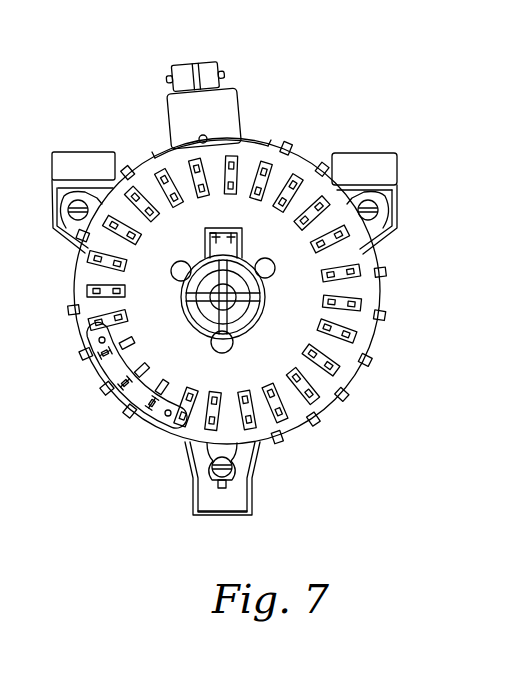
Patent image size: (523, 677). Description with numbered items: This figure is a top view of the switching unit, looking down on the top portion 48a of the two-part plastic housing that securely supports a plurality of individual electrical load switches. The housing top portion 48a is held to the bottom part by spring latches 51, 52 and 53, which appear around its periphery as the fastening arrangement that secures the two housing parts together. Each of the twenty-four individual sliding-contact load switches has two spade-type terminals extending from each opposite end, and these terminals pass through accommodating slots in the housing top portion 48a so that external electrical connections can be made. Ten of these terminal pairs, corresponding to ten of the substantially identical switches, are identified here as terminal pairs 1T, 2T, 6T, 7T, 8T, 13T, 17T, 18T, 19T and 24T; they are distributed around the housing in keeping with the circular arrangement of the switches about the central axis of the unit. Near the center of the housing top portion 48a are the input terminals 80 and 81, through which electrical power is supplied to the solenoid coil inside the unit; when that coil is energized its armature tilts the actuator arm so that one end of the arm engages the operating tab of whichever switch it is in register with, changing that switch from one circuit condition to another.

The terminal pair 13T is at (190, 168).
The terminal pair 17T is at (318, 200).
The terminal pair 18T is at (345, 239).
The terminal pair 19T is at (355, 278).
The terminal pair 24T is at (310, 402).
The terminal pair 1T is at (256, 426).
The terminal pair 2T is at (210, 428).
The terminal pair 6T is at (100, 370).
The terminal pair 7T is at (92, 342).
The terminal pair 8T is at (97, 300).
The housing top portion 48a is at (357, 292).
The spring latch 51 is at (214, 470).
The spring latch 52 is at (65, 236).
The spring latch 53 is at (372, 212).
The input terminal 80 is at (241, 234).
The input terminal 81 is at (206, 234).